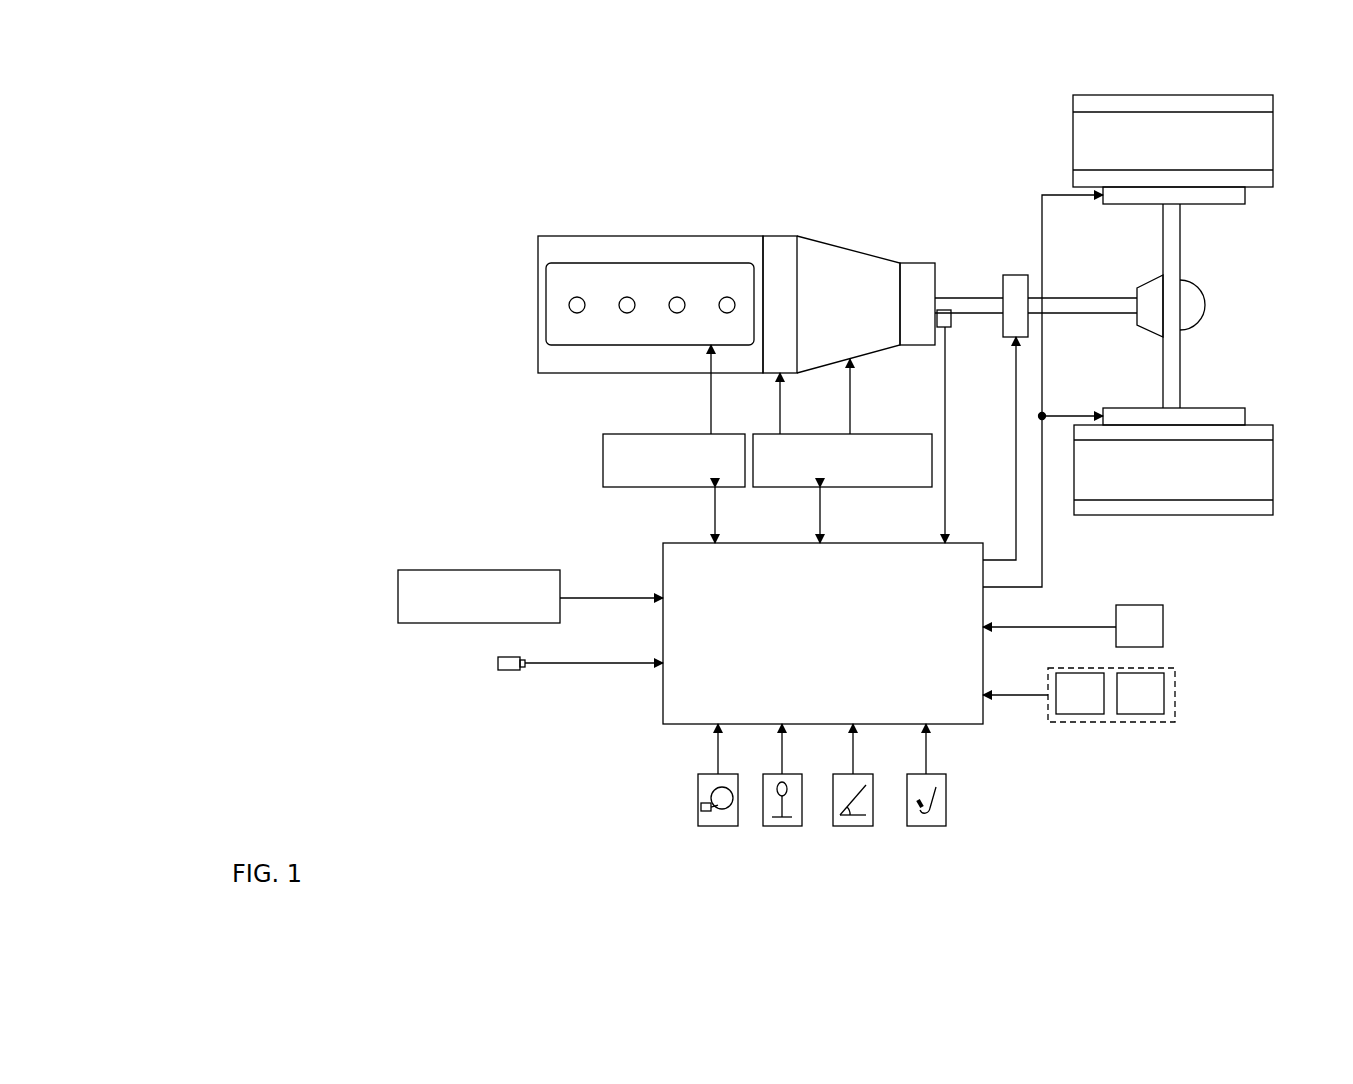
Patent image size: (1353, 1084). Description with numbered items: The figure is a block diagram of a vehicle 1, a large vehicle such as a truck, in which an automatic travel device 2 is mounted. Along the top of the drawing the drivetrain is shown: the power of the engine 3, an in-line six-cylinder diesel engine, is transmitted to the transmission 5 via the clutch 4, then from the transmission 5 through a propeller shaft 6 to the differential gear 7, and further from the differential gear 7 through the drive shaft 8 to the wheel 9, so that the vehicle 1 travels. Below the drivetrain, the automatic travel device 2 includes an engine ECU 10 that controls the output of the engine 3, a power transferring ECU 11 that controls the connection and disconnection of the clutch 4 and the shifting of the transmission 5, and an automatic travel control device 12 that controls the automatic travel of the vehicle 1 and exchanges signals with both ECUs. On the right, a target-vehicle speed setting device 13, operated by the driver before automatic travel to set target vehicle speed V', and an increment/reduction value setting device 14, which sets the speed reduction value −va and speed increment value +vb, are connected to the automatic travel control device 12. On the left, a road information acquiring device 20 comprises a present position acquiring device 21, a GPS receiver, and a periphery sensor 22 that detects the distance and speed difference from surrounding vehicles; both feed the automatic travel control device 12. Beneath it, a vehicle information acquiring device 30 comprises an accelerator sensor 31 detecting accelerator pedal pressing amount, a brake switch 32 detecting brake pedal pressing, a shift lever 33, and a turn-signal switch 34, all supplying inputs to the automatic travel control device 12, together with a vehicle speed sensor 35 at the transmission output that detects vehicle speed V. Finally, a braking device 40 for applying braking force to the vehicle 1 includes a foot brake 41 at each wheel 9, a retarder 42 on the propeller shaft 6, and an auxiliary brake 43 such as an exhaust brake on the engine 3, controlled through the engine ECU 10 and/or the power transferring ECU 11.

The vehicle 1 is at (532, 212).
The automatic travel device 2 is at (958, 740).
The engine 3 is at (655, 236).
The clutch 4 is at (783, 236).
The transmission 5 is at (853, 249).
The propeller shaft 6 is at (1078, 298).
The differential gear 7 is at (1203, 301).
The drive shaft 8 is at (1183, 231).
The wheel 9 is at (1262, 425).
The engine ECU 10 is at (603, 460).
The power transferring ECU 11 is at (903, 434).
The automatic travel control device 12 is at (905, 543).
The target-vehicle speed setting device 13 is at (1163, 627).
The increment/reduction value setting device 14 is at (1175, 695).
The road information acquiring device 20 is at (404, 556).
The present position acquiring device 21 is at (398, 598).
The periphery sensor 22 is at (498, 663).
The vehicle information acquiring device 30 is at (686, 802).
The accelerator sensor 31 is at (852, 826).
The brake switch 32 is at (925, 826).
The shift lever 33 is at (781, 826).
The turn-signal switch 34 is at (717, 826).
The vehicle speed sensor 35 is at (953, 327).
The braking device 40 is at (1014, 204).
The foot brake 41 is at (1120, 204).
The retarder 42 is at (1016, 275).
The auxiliary brake 43 is at (550, 376).